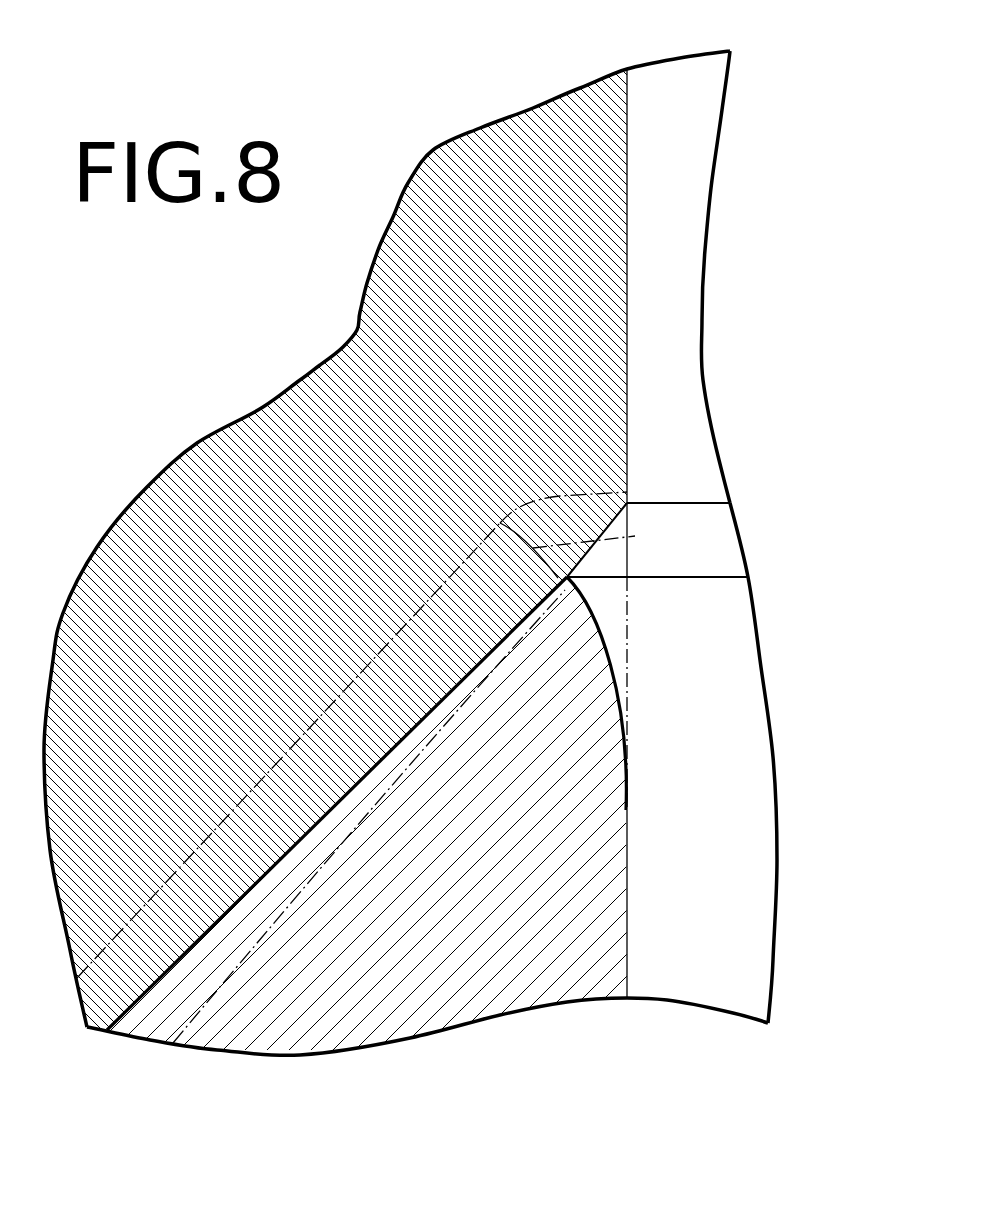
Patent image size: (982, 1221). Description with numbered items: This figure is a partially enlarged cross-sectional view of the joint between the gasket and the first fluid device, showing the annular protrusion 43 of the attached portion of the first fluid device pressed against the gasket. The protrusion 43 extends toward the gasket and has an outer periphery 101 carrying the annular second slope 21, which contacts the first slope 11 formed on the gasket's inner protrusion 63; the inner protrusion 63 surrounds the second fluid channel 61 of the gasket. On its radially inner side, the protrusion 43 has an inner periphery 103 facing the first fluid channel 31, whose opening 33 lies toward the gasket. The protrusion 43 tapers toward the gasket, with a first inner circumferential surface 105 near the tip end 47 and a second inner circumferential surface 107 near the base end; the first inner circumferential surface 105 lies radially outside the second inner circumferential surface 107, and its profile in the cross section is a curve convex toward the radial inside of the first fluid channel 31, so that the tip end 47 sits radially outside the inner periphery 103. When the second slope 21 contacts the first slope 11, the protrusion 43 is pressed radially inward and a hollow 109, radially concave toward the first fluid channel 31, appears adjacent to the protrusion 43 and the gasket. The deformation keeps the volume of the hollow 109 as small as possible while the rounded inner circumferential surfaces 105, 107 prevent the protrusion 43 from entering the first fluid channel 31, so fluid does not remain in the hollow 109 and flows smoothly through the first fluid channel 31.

The first slope 11 is at (408, 729).
The second slope 21 is at (373, 757).
The first fluid channel 31 is at (732, 827).
The opening 33 is at (697, 575).
The protrusion 43 is at (597, 755).
The tip end 47 is at (627, 492).
The second fluid channel 61 is at (690, 150).
The inner protrusion 63 is at (627, 403).
The outer periphery 101 is at (472, 671).
The inner periphery 103 is at (627, 967).
The first inner circumferential surface 105 is at (690, 672).
The second inner circumferential surface 107 is at (628, 939).
The hollow 109 is at (603, 591).